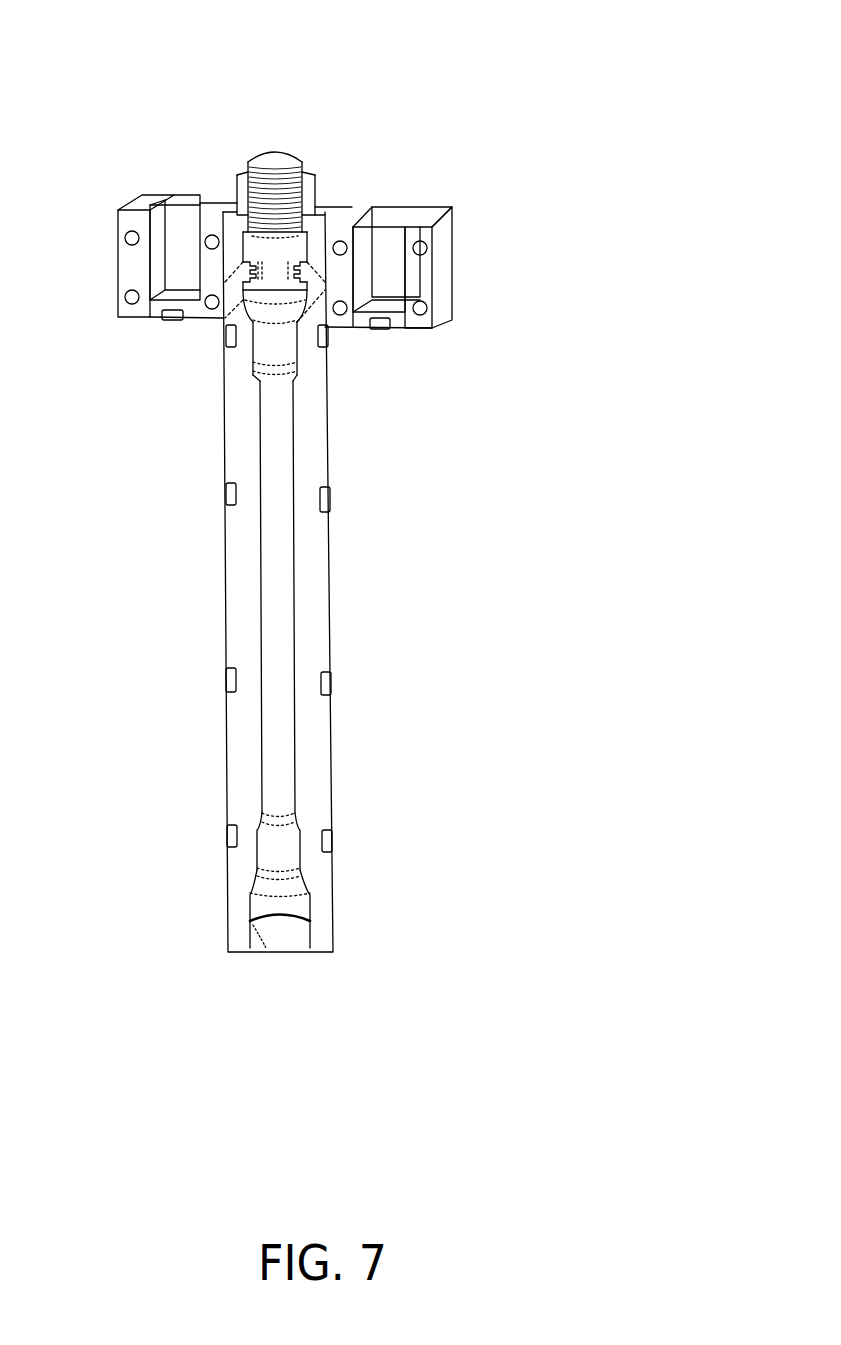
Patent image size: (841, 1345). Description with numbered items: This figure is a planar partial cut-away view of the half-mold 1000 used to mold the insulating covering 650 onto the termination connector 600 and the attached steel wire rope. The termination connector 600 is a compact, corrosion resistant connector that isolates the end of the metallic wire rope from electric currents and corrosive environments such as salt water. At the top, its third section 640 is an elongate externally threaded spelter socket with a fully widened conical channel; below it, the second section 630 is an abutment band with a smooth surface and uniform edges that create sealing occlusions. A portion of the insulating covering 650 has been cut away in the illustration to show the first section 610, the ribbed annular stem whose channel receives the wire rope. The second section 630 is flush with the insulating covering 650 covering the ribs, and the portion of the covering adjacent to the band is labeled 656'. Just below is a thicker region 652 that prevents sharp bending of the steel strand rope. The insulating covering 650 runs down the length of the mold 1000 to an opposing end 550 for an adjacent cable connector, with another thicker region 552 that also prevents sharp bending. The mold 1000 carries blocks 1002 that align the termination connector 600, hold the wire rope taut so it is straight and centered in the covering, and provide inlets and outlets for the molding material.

The termination connector 600 is at (293, 217).
The third section 640 is at (303, 166).
The second section 630 is at (241, 247).
The blocks 1002 is at (347, 213).
The region of the insulating covering adjacent to the band 656' is at (400, 271).
The first section 610 is at (252, 274).
The thicker region 652 is at (292, 307).
The insulating covering 650 is at (281, 351).
The mold 1000 is at (333, 550).
The opposing end 550 is at (273, 833).
The other thicker region 552 is at (257, 885).